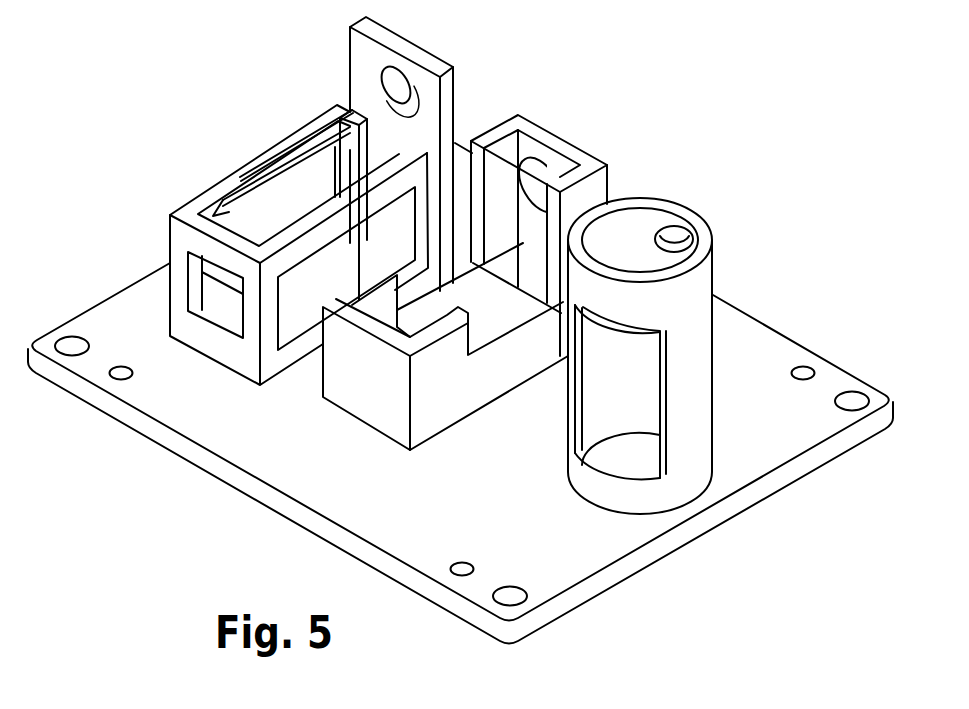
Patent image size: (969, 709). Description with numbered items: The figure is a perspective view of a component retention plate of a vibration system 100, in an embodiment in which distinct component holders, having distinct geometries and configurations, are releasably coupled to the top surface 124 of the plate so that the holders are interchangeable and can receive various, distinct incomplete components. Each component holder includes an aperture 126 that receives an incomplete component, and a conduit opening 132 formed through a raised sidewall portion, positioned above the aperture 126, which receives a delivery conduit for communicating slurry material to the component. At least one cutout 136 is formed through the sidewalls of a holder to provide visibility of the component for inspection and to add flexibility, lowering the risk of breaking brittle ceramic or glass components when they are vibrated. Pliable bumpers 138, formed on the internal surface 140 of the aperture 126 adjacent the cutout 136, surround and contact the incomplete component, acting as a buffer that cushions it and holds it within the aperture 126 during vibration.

The assembly 100 is at (197, 90).
The top surface 124 is at (360, 478).
The aperture 126 is at (277, 167).
The conduit opening 132 is at (400, 73).
The cutout 136 is at (172, 250).
The bumpers 138 is at (317, 162).
The internal surface 140 is at (218, 212).